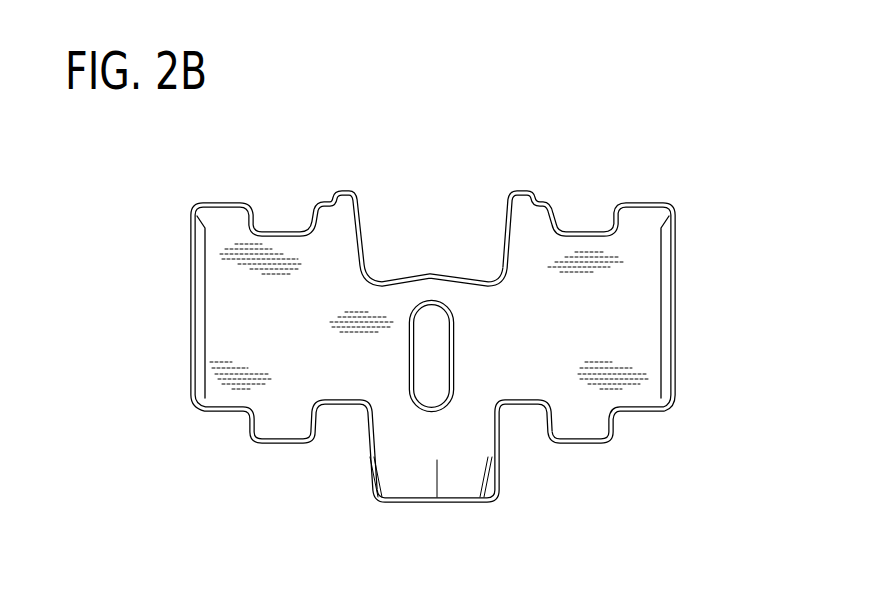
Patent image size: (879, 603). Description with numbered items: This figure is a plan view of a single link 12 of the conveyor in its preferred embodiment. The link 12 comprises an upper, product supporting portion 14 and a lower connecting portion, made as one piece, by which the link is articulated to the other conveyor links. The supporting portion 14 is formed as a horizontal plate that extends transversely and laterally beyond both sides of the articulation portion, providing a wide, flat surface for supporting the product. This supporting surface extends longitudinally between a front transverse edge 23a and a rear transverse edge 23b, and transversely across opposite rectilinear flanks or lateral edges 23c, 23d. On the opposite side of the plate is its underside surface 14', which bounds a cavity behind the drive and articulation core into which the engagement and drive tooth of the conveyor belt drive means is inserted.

The link 12 is at (173, 221).
The product supporting portion 14 is at (727, 210).
The underside surface 14' is at (411, 188).
The front transverse edge 23a is at (547, 503).
The rear transverse edge 23b is at (549, 185).
The lateral edge 23c is at (702, 321).
The lateral edge 23d is at (174, 312).